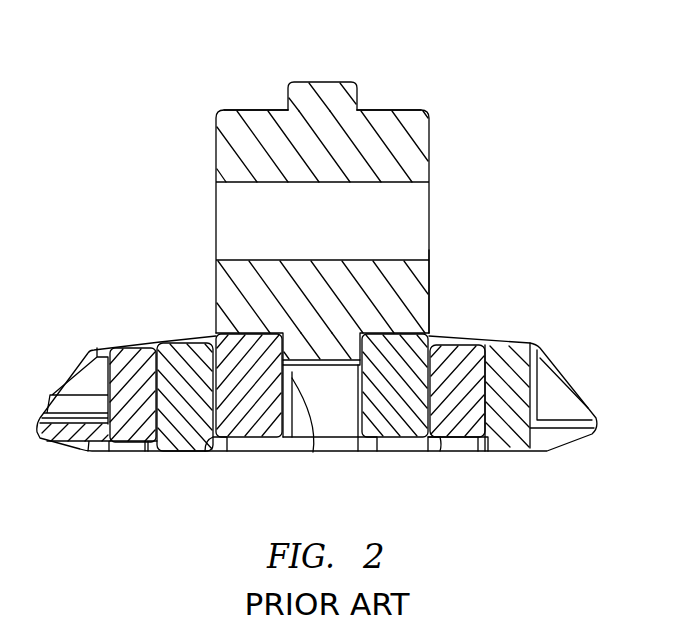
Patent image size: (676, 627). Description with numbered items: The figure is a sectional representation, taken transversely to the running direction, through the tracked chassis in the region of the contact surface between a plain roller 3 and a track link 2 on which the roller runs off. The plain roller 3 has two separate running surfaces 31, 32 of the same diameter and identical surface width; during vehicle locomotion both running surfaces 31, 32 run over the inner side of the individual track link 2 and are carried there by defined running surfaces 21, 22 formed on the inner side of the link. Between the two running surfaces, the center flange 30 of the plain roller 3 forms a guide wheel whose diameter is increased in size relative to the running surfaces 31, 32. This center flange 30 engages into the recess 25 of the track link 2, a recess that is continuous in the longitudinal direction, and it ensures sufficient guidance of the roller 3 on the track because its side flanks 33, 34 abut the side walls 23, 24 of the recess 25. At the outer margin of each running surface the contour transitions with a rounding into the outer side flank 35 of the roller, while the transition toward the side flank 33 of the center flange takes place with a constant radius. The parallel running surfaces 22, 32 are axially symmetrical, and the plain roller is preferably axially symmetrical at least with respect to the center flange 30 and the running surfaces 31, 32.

The track link 2 is at (558, 410).
The plain roller 3 is at (397, 210).
The running surface 21 is at (414, 320).
The running surface 22 is at (230, 325).
The side wall 23 is at (333, 381).
The side wall 24 is at (280, 436).
The recess 25 is at (316, 376).
The center flange 30 is at (320, 96).
The running surface 31 is at (404, 103).
The running surface 32 is at (249, 103).
The side flank 33 is at (347, 331).
The side flank 34 is at (294, 336).
The outer side flank 35 is at (436, 293).